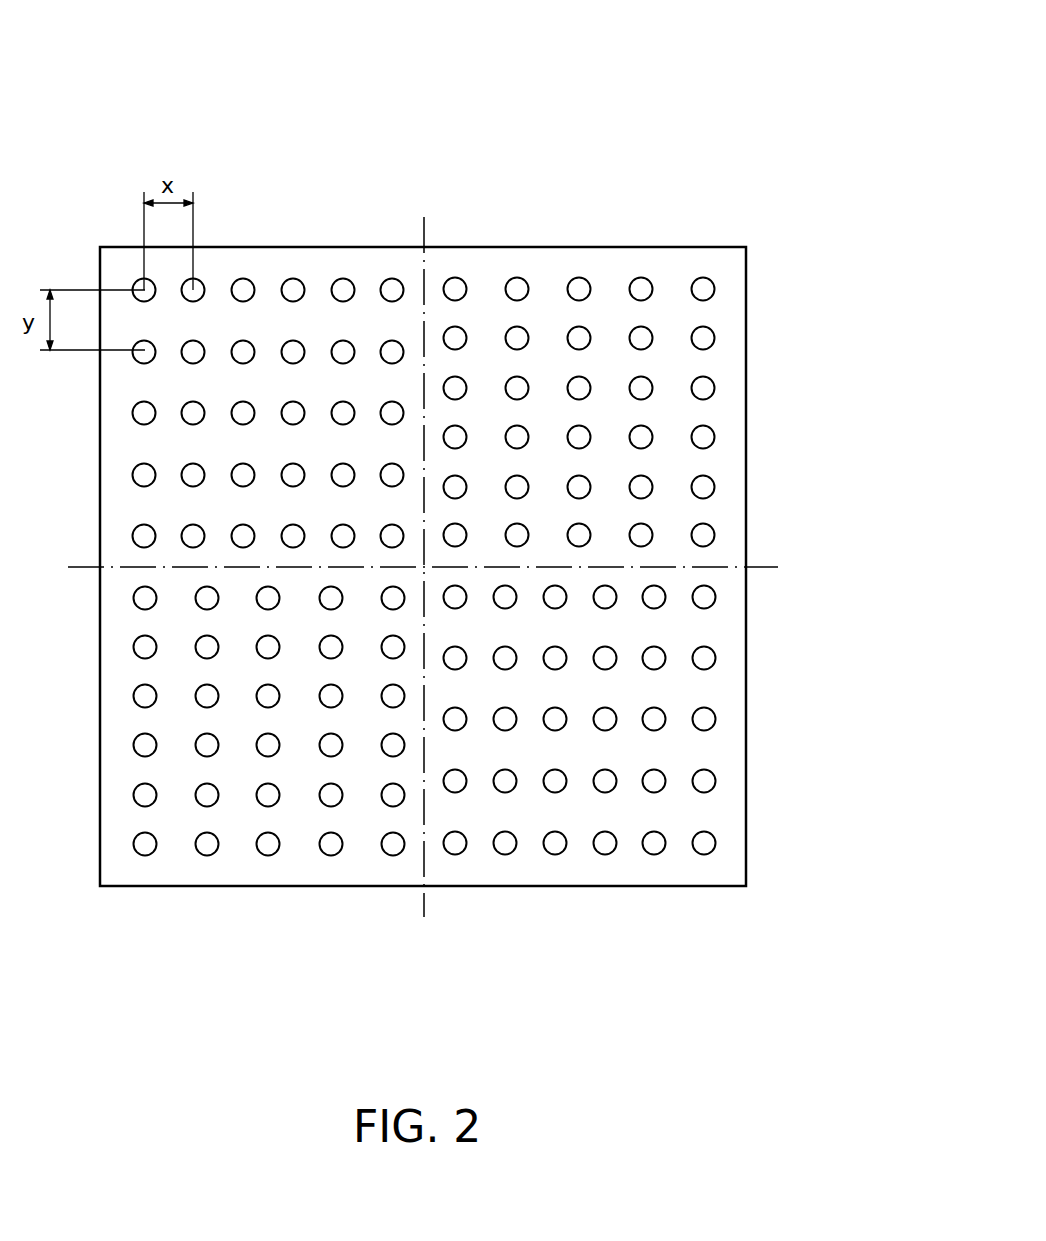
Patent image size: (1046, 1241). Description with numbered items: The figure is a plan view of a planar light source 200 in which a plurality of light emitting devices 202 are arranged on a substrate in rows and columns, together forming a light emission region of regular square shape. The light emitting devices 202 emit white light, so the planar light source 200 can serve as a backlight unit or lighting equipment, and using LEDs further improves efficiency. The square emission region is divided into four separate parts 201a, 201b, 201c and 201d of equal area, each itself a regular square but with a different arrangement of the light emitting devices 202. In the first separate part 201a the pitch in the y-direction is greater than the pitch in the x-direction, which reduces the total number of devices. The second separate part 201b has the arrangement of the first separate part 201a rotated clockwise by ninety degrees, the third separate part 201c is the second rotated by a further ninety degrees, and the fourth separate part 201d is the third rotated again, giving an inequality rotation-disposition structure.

The planar light source 200 is at (577, 152).
The first separate part 201a is at (268, 253).
The second separate part 201b is at (623, 253).
The third separate part 201c is at (733, 753).
The fourth separate part 201d is at (237, 877).
The light emitting devices 202 is at (512, 283).